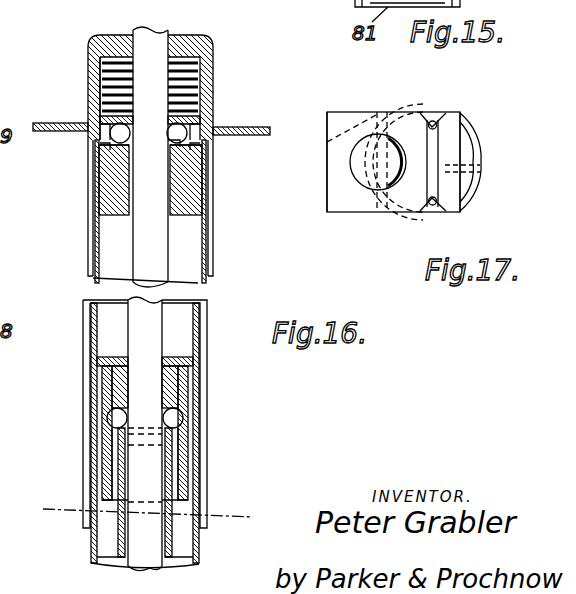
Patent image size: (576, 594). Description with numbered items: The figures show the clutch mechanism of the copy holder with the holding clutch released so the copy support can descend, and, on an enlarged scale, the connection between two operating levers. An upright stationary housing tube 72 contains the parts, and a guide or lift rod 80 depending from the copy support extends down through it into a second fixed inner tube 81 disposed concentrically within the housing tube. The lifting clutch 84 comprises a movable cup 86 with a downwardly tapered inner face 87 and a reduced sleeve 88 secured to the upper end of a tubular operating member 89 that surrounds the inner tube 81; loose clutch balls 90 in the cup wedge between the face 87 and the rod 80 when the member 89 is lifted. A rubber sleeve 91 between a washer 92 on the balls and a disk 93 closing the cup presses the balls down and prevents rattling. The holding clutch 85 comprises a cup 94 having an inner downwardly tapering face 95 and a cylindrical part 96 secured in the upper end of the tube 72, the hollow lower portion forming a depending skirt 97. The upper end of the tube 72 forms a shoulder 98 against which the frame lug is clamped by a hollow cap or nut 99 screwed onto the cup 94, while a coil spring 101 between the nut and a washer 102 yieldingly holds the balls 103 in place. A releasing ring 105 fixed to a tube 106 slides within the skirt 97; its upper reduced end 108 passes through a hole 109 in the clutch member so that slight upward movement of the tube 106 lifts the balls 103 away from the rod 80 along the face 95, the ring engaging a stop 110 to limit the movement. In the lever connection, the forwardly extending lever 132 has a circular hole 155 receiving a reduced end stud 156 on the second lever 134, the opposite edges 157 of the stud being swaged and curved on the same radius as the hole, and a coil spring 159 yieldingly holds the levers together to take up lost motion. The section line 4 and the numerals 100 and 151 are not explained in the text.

In FIG. 16, the section line 4- 4 is at (146, 514).
In FIG. 16, the upright stationary tube 72 is at (208, 312).
In FIG. 16, the guide or lift rod 80 is at (150, 157).
In FIG. 16, the inner fixed tube 81 is at (165, 524).
In FIG. 16, the lifting clutch 84 is at (108, 424).
In FIG. 16, the holding clutch 85 is at (110, 157).
In FIG. 16, the movable cup 86 is at (183, 423).
In FIG. 16, the downwardly tapered inner face 87 is at (98, 375).
In FIG. 16, the reduced sleeve 88 is at (107, 478).
In FIG. 16, the operating member 89 is at (112, 538).
In FIG. 16, the clutch balls 90 is at (185, 408).
In FIG. 16, the rubber sleeve 91 is at (117, 357).
In FIG. 16, the washer 92 is at (110, 402).
In FIG. 16, the disk 93 is at (176, 357).
In FIG. 16, the cup of holding clutch 94 is at (215, 118).
In FIG. 16, the inner downwardly tapering face 95 is at (213, 97).
In FIG. 16, the cylindrical part 96 is at (208, 155).
In FIG. 16, the depending annular flange or skirt 97 is at (200, 200).
In FIG. 16, the shoulder 98 is at (93, 130).
In FIG. 16, the hollow cap or nut 99 is at (213, 64).
In FIG. 16, the cap bore wall 100 is at (100, 101).
In FIG. 16, the coil spring 101 is at (181, 64).
In FIG. 16, the washer 102 is at (112, 124).
In FIG. 16, the balls of holding clutch 103 is at (200, 130).
In FIG. 16, the releasing ring 105 is at (95, 212).
In FIG. 16, the releasing tube 106 is at (204, 556).
In FIG. 16, the upper reduced end 108 is at (108, 163).
In FIG. 16, the hole 109 is at (186, 157).
In FIG. 16, the shoulder or stop 110 is at (103, 193).
In FIG. 17, the forwardly extending lever 132 is at (347, 118).
In FIG. 17, the second lever 134 is at (333, 142).
In FIG. 17, the bore 151 is at (387, 128).
In FIG. 17, the circular hole 155 is at (376, 164).
In FIG. 17, the reduced end stud 156 is at (376, 160).
In FIG. 17, the opposite edges of stud 157 is at (370, 192).
In FIG. 17, the coil spring 159 is at (478, 176).